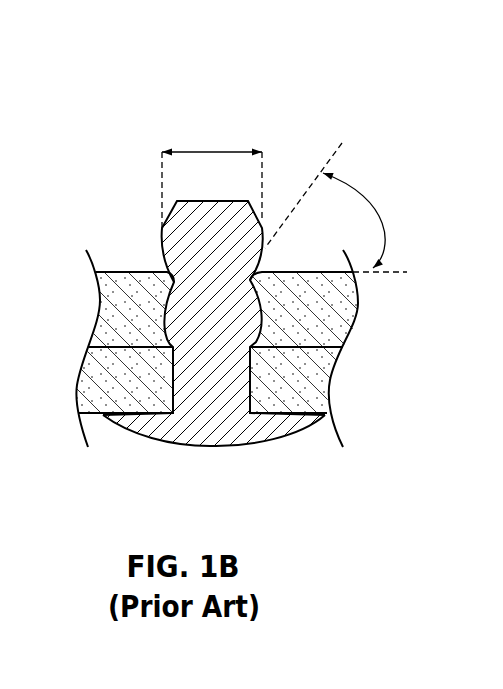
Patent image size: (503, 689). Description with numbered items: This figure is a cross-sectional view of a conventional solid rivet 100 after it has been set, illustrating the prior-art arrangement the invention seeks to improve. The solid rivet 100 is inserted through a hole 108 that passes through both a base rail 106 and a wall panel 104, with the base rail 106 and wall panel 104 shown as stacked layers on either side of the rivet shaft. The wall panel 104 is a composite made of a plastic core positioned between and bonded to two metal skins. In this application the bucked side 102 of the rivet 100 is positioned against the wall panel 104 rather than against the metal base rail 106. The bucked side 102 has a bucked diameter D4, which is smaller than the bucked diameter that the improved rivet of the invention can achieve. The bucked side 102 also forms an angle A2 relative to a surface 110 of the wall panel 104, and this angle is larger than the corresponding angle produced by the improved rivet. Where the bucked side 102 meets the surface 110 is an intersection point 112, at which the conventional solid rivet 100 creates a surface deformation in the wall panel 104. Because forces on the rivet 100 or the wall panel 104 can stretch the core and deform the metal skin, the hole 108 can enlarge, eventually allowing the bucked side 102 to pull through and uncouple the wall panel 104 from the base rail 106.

The solid rivet 100 is at (100, 133).
The bucked side 102 is at (162, 190).
The wall panel 104 is at (117, 312).
The base rail 106 is at (88, 383).
The hole 108 is at (258, 383).
The surface 110 is at (317, 273).
The intersection point 112 is at (272, 285).
The diameter D4 is at (212, 176).
The angle A2 is at (341, 207).